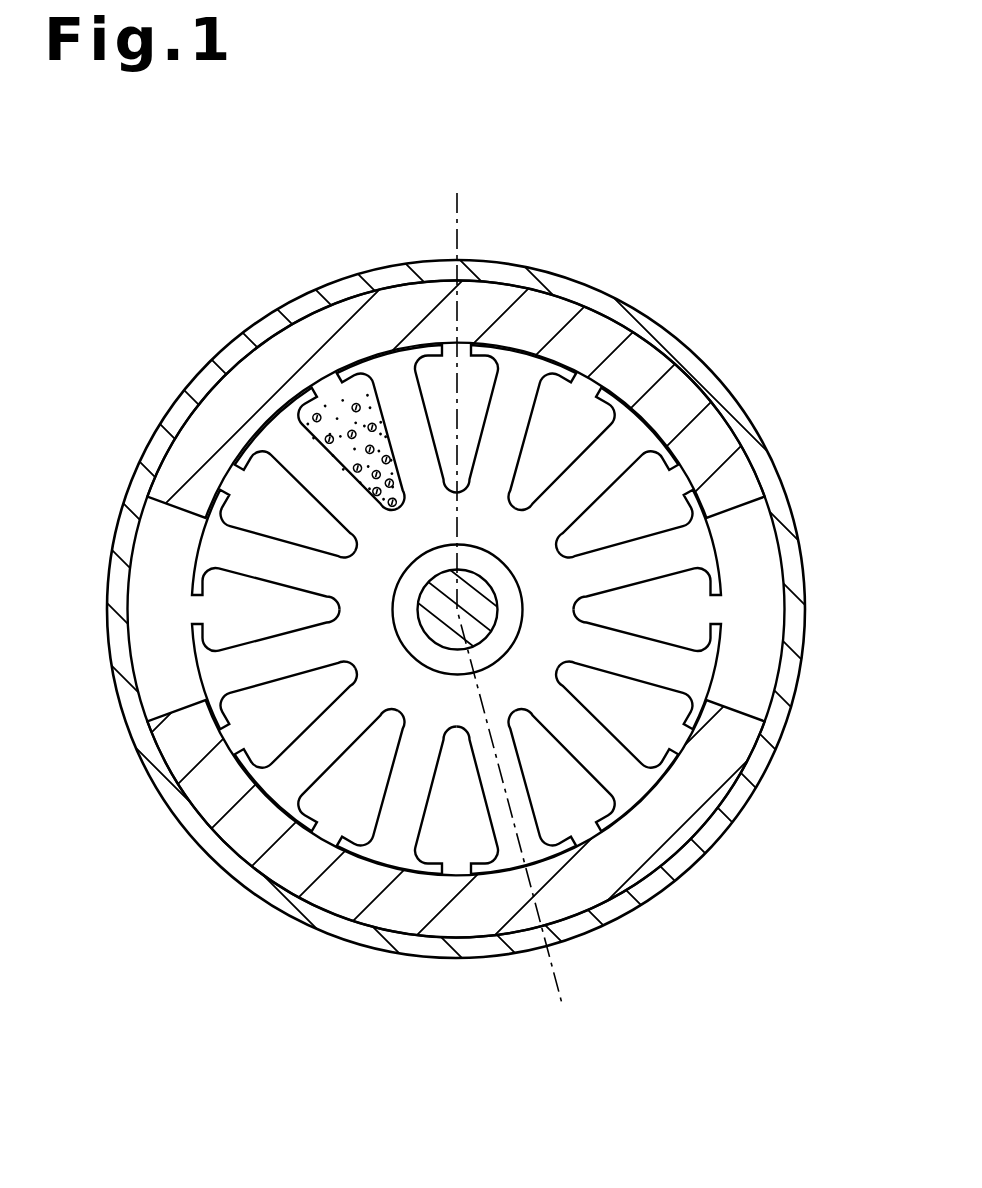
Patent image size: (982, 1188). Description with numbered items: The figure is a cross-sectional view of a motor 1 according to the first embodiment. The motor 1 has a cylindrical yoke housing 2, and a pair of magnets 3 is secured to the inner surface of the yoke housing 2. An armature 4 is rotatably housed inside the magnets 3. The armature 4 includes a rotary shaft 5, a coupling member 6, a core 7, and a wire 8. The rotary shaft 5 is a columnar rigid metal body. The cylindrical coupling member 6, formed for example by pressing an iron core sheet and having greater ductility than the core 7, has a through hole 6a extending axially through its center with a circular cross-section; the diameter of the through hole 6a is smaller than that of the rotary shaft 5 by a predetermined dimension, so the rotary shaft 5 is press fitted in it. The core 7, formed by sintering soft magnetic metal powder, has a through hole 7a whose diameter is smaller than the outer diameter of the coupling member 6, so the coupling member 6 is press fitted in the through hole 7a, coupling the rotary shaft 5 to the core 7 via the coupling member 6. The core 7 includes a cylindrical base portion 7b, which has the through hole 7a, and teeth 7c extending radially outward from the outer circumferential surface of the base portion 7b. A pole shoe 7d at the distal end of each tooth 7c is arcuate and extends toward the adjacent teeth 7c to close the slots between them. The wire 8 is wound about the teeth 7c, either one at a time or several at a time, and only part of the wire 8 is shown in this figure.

The motor 1 is at (776, 259).
The yoke housing 2 is at (470, 198).
The magnets 3 is at (340, 315).
The armature 4 is at (492, 610).
The rotary shaft 5 is at (490, 582).
The coupling member 6 is at (427, 568).
The through hole 6a is at (407, 613).
The core 7 is at (711, 658).
The through hole 7a is at (432, 662).
The base portion 7b is at (553, 612).
The teeth 7c is at (197, 647).
The pole shoe 7d is at (353, 837).
The wire 8 is at (308, 408).